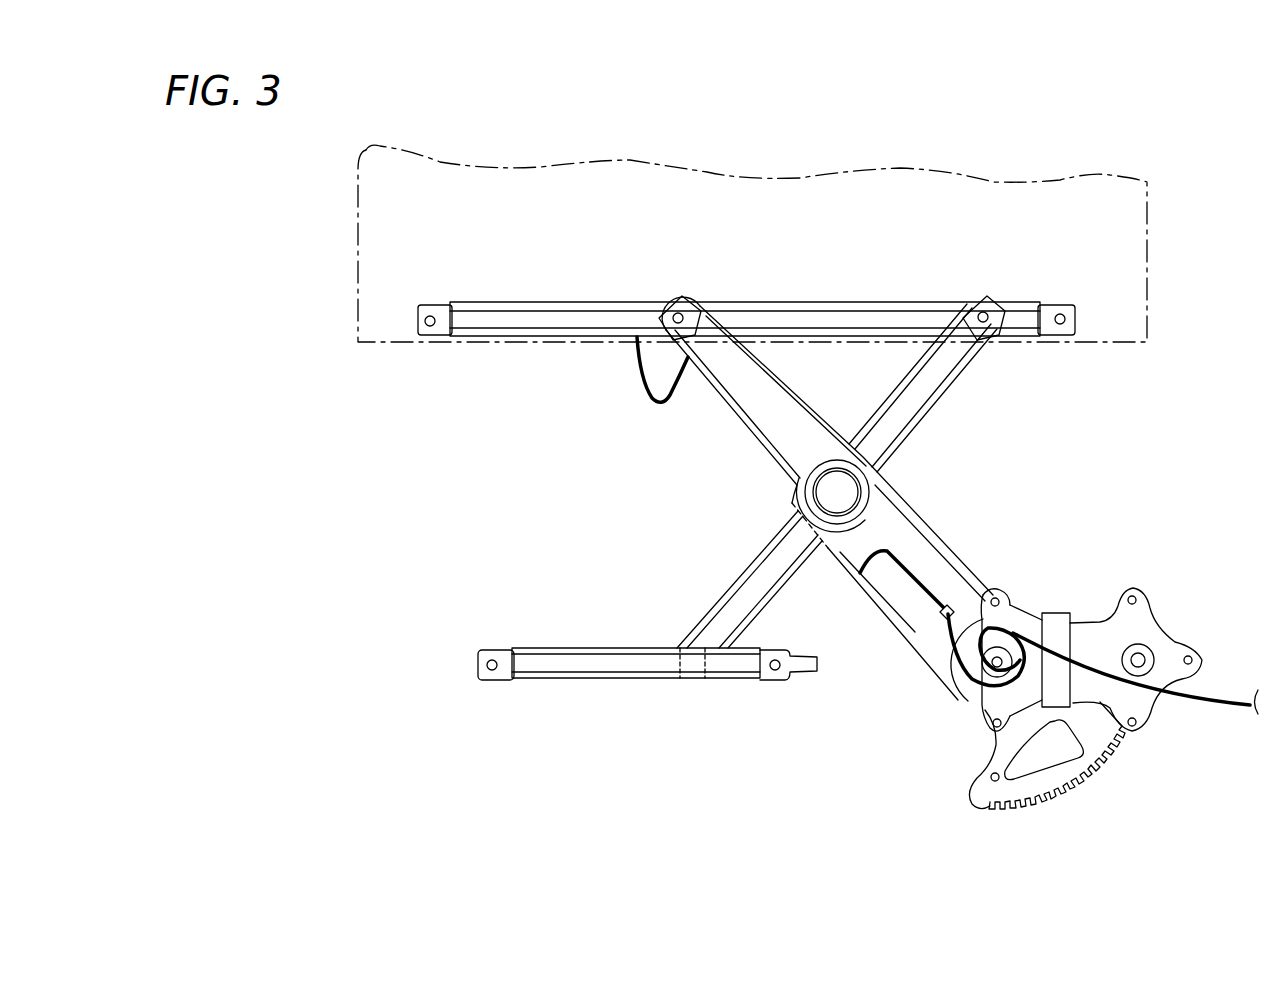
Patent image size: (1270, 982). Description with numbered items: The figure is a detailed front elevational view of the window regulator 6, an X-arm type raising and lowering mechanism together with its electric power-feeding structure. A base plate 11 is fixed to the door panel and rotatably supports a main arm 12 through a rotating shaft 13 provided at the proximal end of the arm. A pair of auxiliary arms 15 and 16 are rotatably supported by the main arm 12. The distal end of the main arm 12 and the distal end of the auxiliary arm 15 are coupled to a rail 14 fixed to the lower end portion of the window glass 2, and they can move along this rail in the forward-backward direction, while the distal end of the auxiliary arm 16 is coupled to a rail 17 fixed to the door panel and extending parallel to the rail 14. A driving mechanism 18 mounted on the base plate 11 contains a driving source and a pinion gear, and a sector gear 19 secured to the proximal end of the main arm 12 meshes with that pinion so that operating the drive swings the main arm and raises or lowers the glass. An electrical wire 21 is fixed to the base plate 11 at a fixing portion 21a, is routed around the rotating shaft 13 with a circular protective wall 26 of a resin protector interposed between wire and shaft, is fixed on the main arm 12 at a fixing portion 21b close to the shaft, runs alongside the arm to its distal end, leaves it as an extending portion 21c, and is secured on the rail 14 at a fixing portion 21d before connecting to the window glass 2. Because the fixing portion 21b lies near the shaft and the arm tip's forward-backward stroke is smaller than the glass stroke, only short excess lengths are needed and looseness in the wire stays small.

The window glass 2 is at (565, 200).
The window regulator 6 is at (1120, 482).
The base plate 11 is at (1177, 635).
The main arm 12 is at (904, 640).
The rotating shaft 13 is at (985, 700).
The rail 14 is at (495, 320).
The auxiliary arm 15 is at (946, 403).
The auxiliary arm 16 is at (742, 565).
The rail 17 is at (582, 682).
The driving mechanism 18 is at (1156, 664).
The sector gear 19 is at (1048, 792).
The electrical wire 21 is at (1223, 708).
The fixing portion 21a is at (992, 594).
The fixing portion 21b is at (950, 605).
The extending portion 21c is at (683, 368).
The fixing portion 21d is at (626, 345).
The protective wall 26 is at (985, 665).